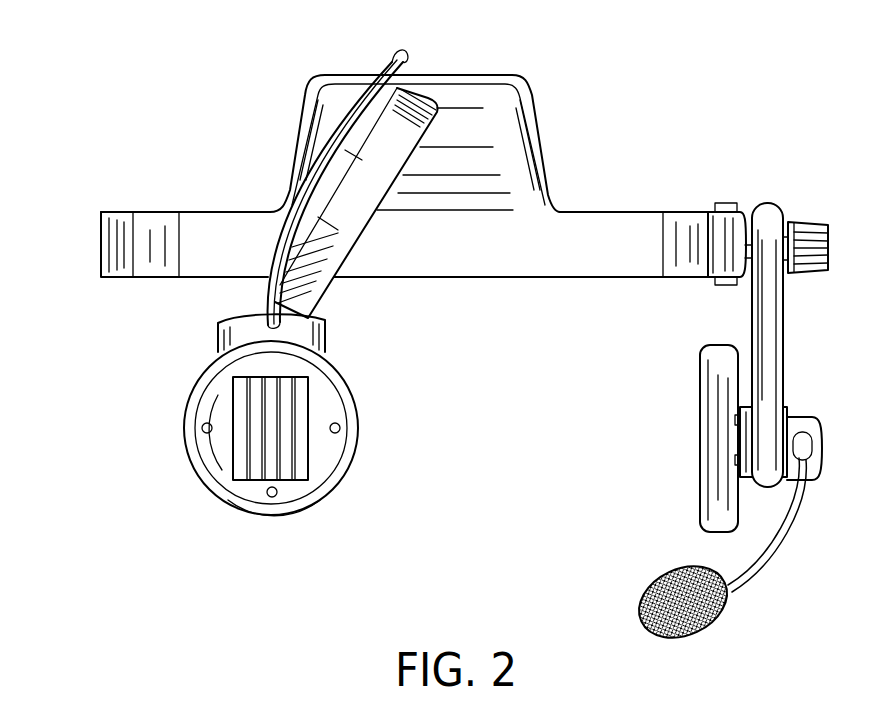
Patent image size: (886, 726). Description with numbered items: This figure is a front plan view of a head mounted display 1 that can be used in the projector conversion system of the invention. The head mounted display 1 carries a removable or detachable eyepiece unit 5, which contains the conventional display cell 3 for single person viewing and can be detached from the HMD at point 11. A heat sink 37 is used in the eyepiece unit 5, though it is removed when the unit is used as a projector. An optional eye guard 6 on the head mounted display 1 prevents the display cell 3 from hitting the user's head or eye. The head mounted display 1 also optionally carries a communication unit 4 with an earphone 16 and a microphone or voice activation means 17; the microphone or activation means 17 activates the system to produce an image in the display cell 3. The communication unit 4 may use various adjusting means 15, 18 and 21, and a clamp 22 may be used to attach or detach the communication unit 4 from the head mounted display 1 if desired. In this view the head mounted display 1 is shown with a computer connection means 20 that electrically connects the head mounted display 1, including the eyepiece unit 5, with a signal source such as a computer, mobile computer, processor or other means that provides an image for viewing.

The head mounted display 1 is at (152, 143).
The display cell 3 is at (345, 378).
The communication unit 4 is at (823, 437).
The eyepiece unit 5 is at (352, 223).
The eye guard 6 is at (483, 167).
The detachment point 11 is at (415, 100).
The adjusting means 15 is at (810, 222).
The earphone 16 is at (703, 412).
The microphone or voice activation means 17 is at (717, 617).
The adjusting means 18 is at (802, 415).
The computer connection means 20 is at (393, 63).
The adjusting means 21 is at (770, 323).
The clamp 22 is at (723, 203).
The heat sink 37 is at (290, 448).